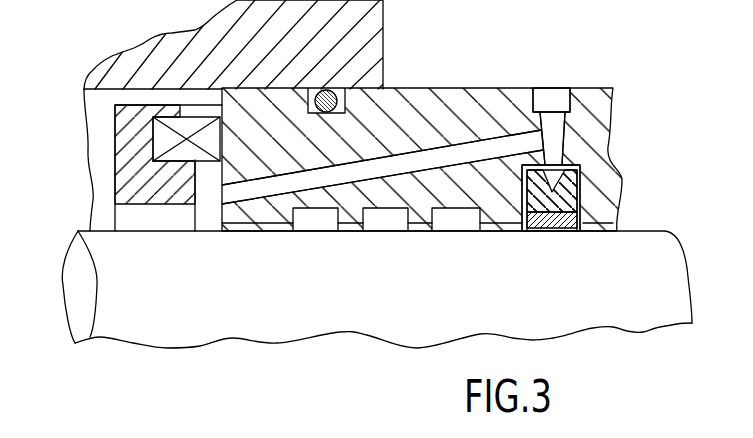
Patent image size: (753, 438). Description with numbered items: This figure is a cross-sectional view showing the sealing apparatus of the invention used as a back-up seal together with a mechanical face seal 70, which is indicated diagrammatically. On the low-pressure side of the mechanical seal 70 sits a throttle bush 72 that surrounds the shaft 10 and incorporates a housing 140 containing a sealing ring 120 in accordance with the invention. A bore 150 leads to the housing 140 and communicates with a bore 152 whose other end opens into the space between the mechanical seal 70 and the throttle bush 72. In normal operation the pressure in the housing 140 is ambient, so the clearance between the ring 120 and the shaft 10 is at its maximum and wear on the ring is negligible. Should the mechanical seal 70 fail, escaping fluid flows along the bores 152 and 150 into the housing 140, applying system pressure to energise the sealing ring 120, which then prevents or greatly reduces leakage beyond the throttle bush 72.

The shaft 10 is at (113, 303).
The mechanical face seal 70 is at (109, 145).
The throttle bush 72 is at (389, 195).
The sealing ring 120 is at (578, 185).
The housing 140 is at (553, 191).
The bore 150 is at (552, 143).
The bore 152 is at (437, 157).